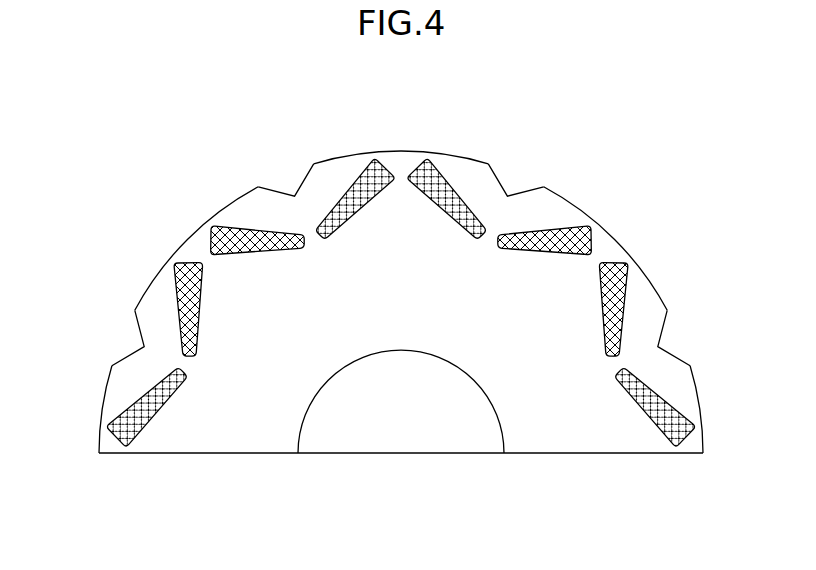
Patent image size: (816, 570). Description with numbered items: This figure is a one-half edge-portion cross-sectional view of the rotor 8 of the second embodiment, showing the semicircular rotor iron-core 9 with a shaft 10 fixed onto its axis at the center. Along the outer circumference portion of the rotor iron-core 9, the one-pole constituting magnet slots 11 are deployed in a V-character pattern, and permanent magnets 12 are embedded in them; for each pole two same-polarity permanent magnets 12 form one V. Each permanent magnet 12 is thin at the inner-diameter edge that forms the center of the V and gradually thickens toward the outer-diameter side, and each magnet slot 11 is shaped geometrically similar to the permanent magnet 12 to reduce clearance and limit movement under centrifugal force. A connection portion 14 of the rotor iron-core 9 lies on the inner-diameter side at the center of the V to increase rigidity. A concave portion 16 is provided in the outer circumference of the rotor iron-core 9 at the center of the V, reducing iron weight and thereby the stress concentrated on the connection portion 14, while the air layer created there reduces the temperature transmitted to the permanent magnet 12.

The rotor 8 is at (403, 150).
The rotor iron-core 9 is at (552, 436).
The shaft 10 is at (405, 440).
The magnet slot 11 is at (175, 296).
The permanent magnet 12 is at (541, 248).
The connection portion 14 is at (310, 237).
The concave portion 16 is at (513, 185).